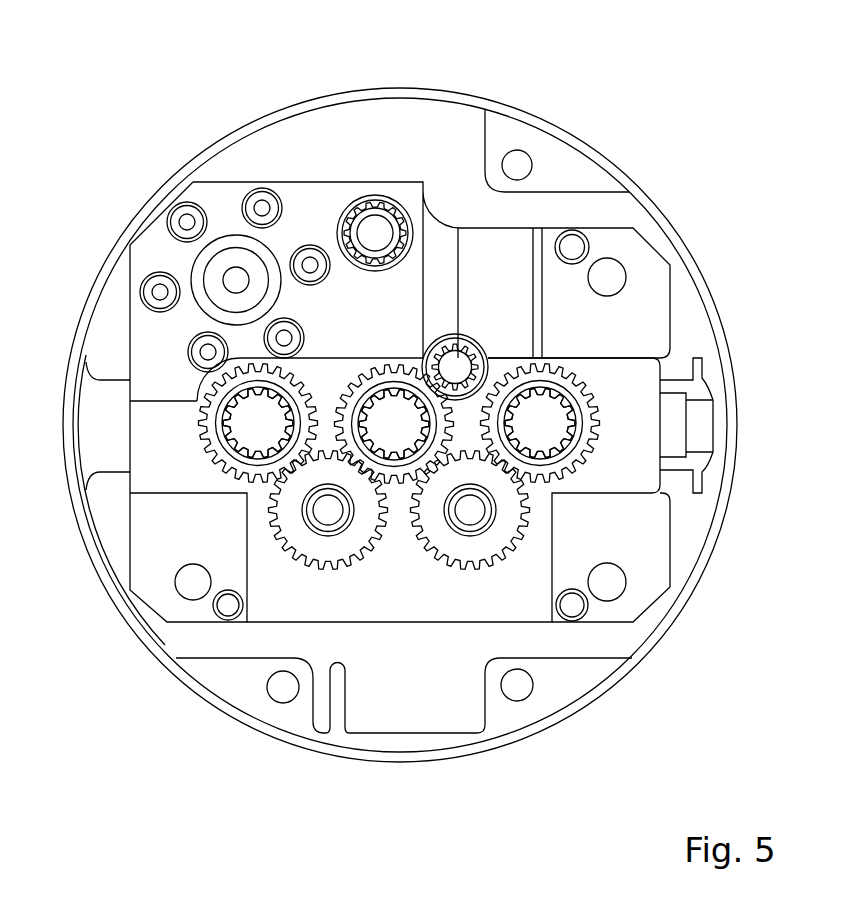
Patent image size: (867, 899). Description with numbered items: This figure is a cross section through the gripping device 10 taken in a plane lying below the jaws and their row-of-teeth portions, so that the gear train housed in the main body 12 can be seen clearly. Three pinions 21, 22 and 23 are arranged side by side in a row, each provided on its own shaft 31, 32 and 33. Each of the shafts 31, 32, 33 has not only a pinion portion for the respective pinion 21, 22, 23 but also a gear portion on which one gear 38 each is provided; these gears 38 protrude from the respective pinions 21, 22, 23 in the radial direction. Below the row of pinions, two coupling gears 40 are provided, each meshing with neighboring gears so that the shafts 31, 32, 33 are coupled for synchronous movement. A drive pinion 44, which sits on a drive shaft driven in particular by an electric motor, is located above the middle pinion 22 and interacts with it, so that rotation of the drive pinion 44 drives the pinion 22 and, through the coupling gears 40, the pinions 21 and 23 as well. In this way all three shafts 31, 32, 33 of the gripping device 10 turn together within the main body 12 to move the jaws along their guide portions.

The gripping device 10 is at (681, 181).
The main body 12 is at (573, 178).
The pinion 21 is at (250, 427).
The pinion 22 is at (412, 382).
The pinion 23 is at (540, 423).
The shaft 31 is at (253, 427).
The shaft 32 is at (393, 423).
The shaft 33 is at (540, 423).
The gear 38 is at (357, 390).
The coupling gear 40 is at (353, 543).
The drive pinion 44 is at (455, 366).